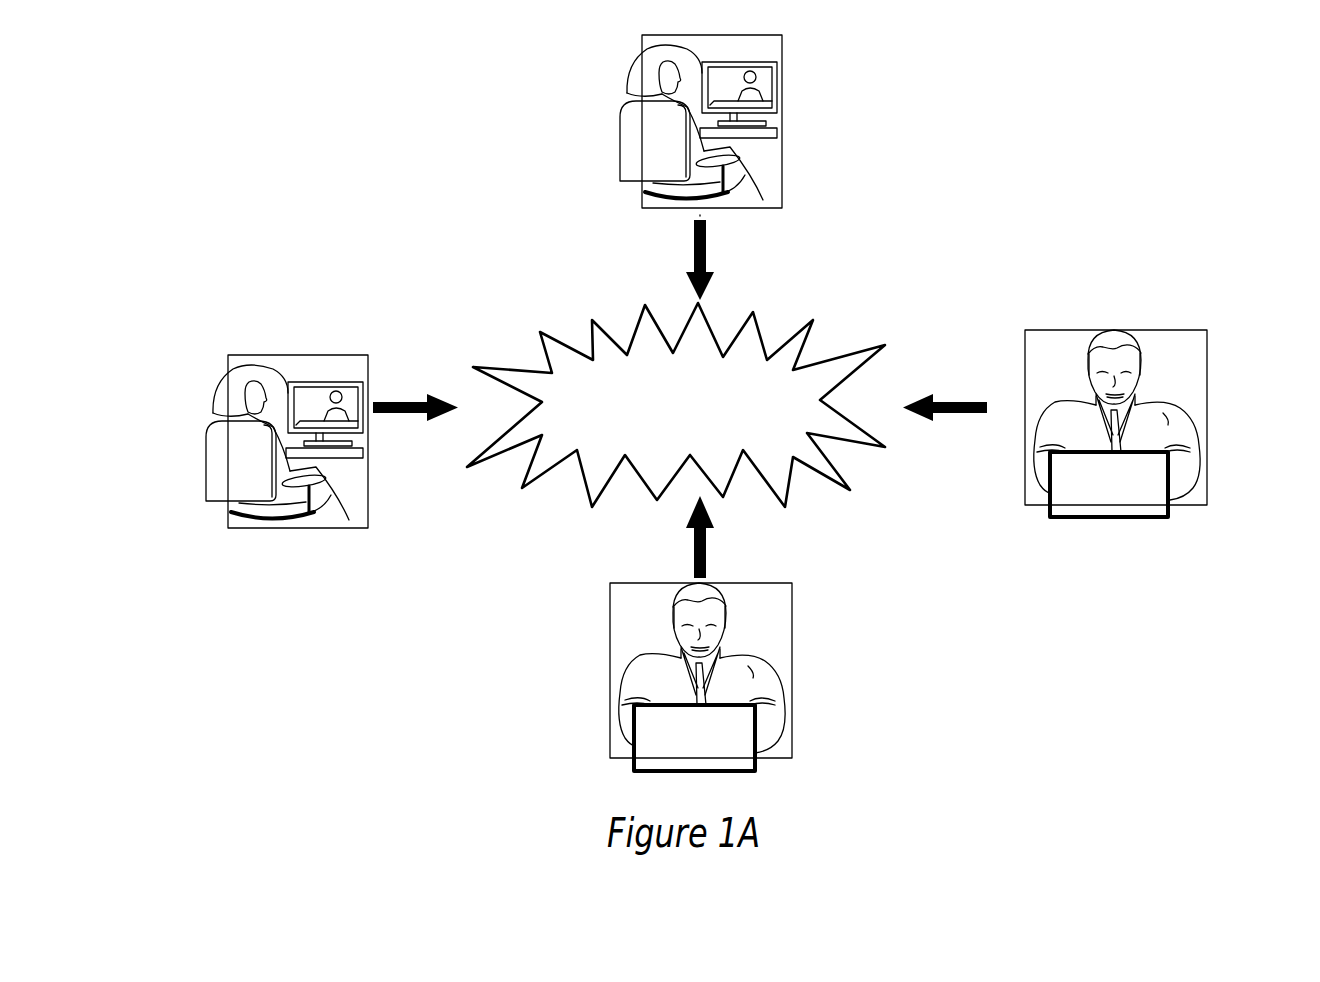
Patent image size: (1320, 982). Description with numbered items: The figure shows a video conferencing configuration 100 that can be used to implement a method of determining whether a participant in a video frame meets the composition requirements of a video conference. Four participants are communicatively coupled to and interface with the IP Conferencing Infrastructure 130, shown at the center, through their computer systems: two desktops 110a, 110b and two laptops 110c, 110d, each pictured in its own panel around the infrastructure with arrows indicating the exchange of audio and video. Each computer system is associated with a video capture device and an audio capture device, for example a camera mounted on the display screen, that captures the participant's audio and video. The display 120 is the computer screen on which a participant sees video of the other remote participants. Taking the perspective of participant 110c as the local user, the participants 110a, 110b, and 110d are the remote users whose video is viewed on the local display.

The video conferencing configuration 100 is at (1057, 136).
The desktop computer system 110a is at (227, 522).
The desktop computer system 110b is at (782, 125).
The laptop computer system 110c is at (1209, 377).
The laptop computer system 110d is at (794, 625).
The display 120 is at (279, 364).
The IP Conferencing Infrastructure 130 is at (676, 450).